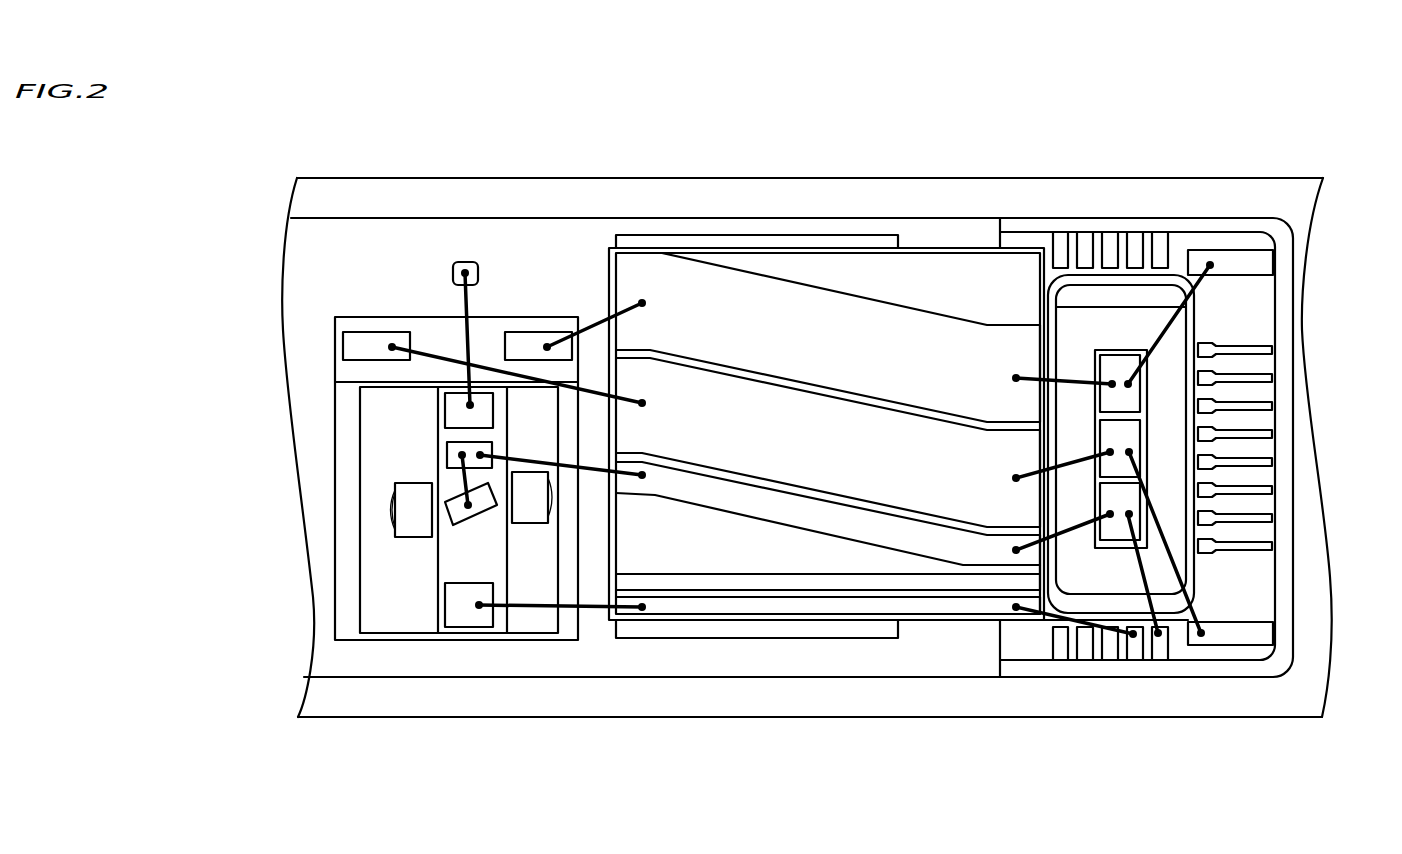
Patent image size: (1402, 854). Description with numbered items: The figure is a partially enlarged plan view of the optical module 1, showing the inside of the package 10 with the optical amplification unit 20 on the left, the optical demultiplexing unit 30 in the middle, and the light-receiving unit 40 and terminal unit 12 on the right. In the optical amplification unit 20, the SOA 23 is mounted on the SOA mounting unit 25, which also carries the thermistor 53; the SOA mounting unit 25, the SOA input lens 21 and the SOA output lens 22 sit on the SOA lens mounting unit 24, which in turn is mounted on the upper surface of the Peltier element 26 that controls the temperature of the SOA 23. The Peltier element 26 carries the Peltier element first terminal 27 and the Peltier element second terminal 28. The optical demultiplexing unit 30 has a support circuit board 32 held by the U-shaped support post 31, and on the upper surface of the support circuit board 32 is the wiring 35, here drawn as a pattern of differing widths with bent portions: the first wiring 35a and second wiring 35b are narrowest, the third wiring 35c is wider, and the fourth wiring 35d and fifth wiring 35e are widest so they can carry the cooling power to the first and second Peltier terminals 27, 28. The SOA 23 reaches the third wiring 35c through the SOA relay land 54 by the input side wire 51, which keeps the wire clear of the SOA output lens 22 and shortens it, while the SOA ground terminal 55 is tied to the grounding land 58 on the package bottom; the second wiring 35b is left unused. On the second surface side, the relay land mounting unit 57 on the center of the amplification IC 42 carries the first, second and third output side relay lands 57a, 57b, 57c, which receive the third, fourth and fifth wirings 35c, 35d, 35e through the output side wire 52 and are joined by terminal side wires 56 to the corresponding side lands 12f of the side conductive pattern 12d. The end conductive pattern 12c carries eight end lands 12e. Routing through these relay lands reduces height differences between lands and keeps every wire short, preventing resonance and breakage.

The optical module 1 is at (748, 140).
The package 10 is at (350, 697).
The terminal unit 12 is at (1205, 240).
The end conductive pattern 12c is at (1253, 393).
The side conductive pattern 12d is at (1160, 665).
The end land 12e is at (1213, 552).
The side land 12f is at (1253, 632).
The optical amplification unit 20 is at (482, 305).
The SOA input lens 21 is at (407, 510).
The SOA output lens 22 is at (532, 513).
The semiconductor optical amplifier (SOA) 23 is at (435, 510).
The SOA lens mounting unit 24 is at (402, 620).
The SOA mounting unit 25 is at (457, 560).
The Peltier element 26 is at (425, 328).
The Peltier element first terminal 27 is at (358, 347).
The Peltier element second terminal 28 is at (533, 340).
The optical demultiplexing unit 30 is at (932, 237).
The support post 31 is at (668, 240).
The support circuit board 32 is at (867, 267).
The wiring 35 is at (743, 262).
The first wiring 35a is at (672, 607).
The second wiring 35b is at (728, 582).
The third wiring 35c is at (805, 518).
The fourth wiring 35d is at (870, 475).
The fifth wiring 35e is at (950, 373).
The light-receiving unit 40 is at (1135, 310).
The amplification IC 42 is at (1112, 332).
The input side wire 51 is at (493, 360).
The output side wire 52 is at (1073, 373).
The thermistor 53 is at (467, 617).
The SOA relay land 54 is at (453, 455).
The SOA ground terminal 55 is at (460, 412).
The terminal side wire 56 is at (1202, 285).
The relay land mounting unit 57 is at (1158, 364).
The first output side relay land 57a is at (1130, 500).
The second output side relay land 57b is at (1122, 440).
The third output side relay land 57c is at (1130, 400).
The grounding land 58 is at (468, 260).